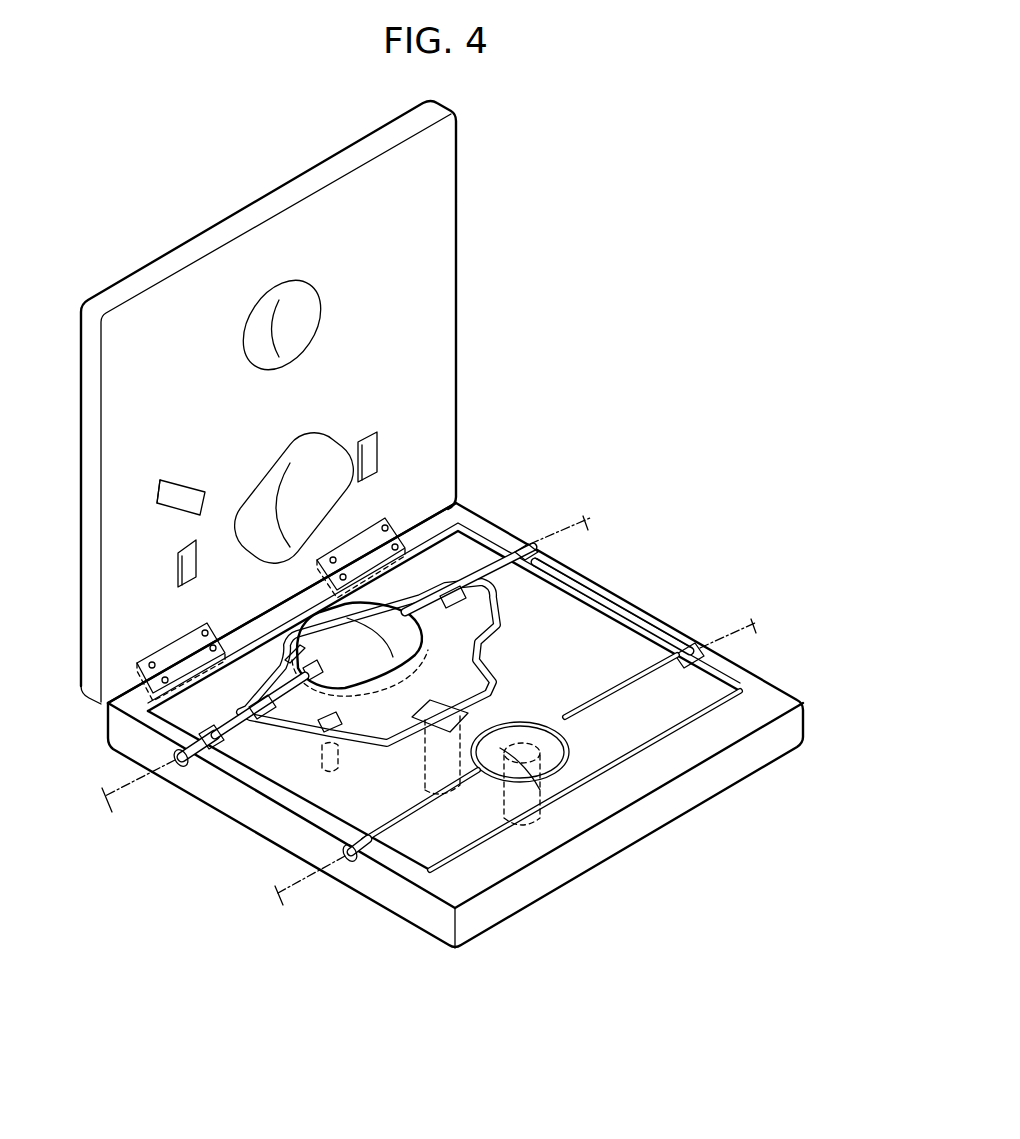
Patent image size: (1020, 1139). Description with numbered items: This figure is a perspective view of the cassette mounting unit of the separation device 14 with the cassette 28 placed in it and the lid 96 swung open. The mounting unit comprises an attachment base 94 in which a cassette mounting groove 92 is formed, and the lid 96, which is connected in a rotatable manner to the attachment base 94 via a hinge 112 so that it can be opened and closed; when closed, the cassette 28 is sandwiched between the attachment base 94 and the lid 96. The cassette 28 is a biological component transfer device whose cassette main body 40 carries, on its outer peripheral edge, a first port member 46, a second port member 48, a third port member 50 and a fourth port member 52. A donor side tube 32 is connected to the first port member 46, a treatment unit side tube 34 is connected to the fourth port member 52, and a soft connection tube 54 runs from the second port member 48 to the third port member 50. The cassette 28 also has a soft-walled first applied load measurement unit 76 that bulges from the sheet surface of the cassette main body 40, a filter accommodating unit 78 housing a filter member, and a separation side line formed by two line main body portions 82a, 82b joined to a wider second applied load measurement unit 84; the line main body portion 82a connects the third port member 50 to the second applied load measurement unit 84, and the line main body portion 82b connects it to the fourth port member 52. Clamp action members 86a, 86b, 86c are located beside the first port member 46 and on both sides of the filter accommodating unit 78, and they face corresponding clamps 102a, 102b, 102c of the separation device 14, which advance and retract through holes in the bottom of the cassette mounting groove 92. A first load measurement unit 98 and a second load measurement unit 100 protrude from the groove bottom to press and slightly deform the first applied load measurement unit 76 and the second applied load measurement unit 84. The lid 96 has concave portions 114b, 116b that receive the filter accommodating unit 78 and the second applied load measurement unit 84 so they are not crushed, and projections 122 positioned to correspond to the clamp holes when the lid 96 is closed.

The separation device 14 is at (618, 230).
The cassette 28 is at (607, 618).
The donor side tube 32 is at (120, 782).
The treatment unit side tube 34 is at (300, 895).
The cassette main body 40 is at (263, 668).
The first port member 46 is at (205, 738).
The second port member 48 is at (523, 546).
The third port member 50 is at (702, 660).
The fourth port member 52 is at (355, 862).
The connection tube 54 is at (590, 520).
The first applied load measurement unit 76 is at (425, 715).
The filter accommodating unit 78 is at (323, 643).
The line main body portion 82a is at (640, 675).
The line main body portion 82b is at (420, 812).
The second applied load measurement unit 84 is at (522, 732).
The clamp action member 86a is at (330, 733).
The clamp action member 86b is at (260, 693).
The clamp action member 86c is at (452, 588).
The cassette mounting groove 92 is at (578, 598).
The attachment base 94 is at (668, 608).
The lid 96 is at (440, 228).
The first load measurement unit 98 is at (425, 772).
The second load measurement unit 100 is at (540, 830).
The clamp 102a is at (330, 735).
The clamp 102b is at (258, 712).
The clamp 102c is at (412, 628).
The hinge 112 is at (373, 517).
The concave portion 114b is at (320, 462).
The concave portion 116b is at (300, 300).
The projection 122 is at (372, 432).